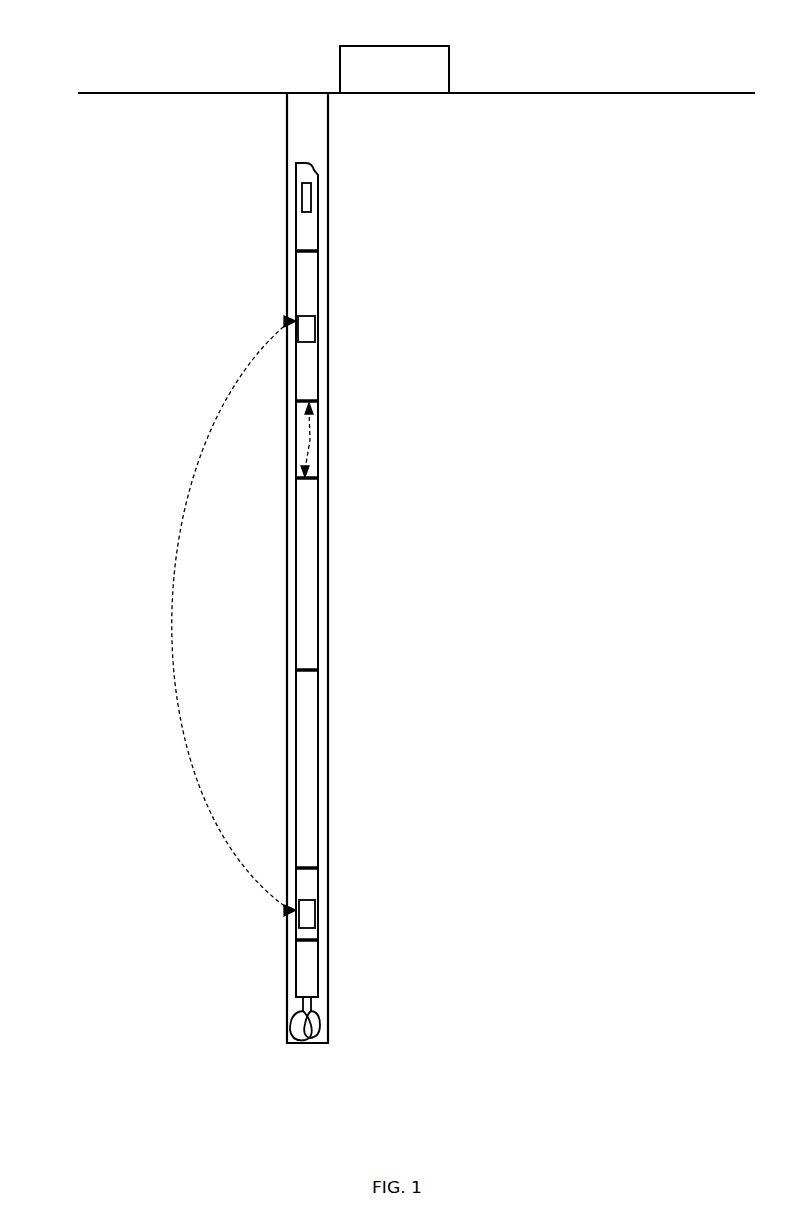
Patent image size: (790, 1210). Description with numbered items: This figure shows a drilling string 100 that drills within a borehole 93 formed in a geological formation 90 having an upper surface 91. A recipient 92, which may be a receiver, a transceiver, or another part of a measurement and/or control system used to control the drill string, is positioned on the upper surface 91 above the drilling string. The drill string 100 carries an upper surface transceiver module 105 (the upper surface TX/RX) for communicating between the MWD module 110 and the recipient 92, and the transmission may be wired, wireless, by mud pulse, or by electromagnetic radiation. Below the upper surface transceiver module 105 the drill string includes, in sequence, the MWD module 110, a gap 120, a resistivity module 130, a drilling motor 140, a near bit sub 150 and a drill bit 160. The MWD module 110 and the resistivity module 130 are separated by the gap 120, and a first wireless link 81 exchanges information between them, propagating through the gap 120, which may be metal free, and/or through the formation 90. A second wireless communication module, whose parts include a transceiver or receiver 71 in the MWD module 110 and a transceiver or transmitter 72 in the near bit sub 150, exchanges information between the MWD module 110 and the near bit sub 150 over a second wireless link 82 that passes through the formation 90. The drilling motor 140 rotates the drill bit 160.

The geological formation 90 is at (496, 1097).
The upper surface 91 is at (183, 93).
The recipient 92 is at (407, 90).
The borehole 93 is at (307, 112).
The drilling string 100 is at (336, 219).
The upper surface transceiver module 105 is at (302, 193).
The MWD module 110 is at (318, 311).
The transceiver or receiver 71 is at (318, 329).
The gap 120 is at (318, 432).
The first wireless link 81 is at (310, 440).
The second wireless link 82 is at (234, 616).
The resistivity module 130 is at (318, 555).
The drilling motor 140 is at (318, 753).
The transceiver or transmitter 72 is at (318, 906).
The near bit sub 150 is at (318, 921).
The drill bit 160 is at (318, 997).